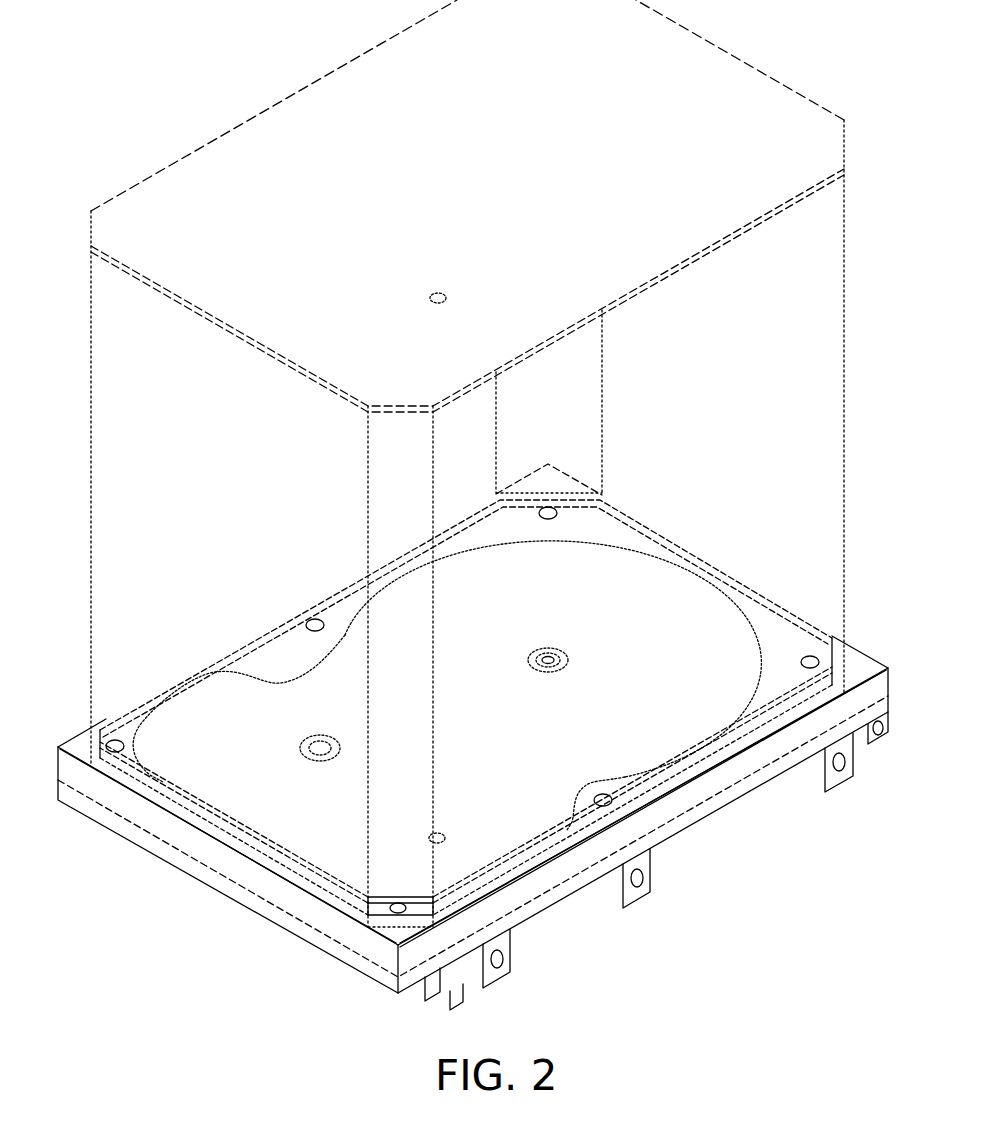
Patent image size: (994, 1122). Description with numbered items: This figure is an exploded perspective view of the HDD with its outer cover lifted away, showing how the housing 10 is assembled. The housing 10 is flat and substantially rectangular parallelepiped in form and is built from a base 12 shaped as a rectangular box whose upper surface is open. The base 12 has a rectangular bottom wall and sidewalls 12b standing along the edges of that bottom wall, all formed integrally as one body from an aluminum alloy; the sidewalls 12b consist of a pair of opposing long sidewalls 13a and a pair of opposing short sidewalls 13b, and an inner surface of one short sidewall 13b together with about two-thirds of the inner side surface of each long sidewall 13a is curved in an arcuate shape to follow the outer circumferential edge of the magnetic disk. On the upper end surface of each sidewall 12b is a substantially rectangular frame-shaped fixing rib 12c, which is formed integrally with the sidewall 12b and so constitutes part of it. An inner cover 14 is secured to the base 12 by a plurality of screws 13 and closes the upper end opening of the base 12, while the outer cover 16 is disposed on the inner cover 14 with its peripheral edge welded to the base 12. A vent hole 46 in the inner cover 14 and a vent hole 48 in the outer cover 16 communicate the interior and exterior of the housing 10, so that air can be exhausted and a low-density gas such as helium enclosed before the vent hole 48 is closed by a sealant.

The housing 10 is at (176, 524).
The base 12 is at (493, 735).
The sidewalls 12b is at (592, 900).
The fixing rib 12c is at (186, 678).
The screws 13 is at (473, 737).
The long sidewalls 13a is at (751, 820).
The short sidewalls 13b is at (226, 870).
The inner cover 14 is at (641, 583).
The outer cover 16 is at (467, 463).
The vent hole 46 is at (447, 834).
The vent hole 48 is at (448, 296).